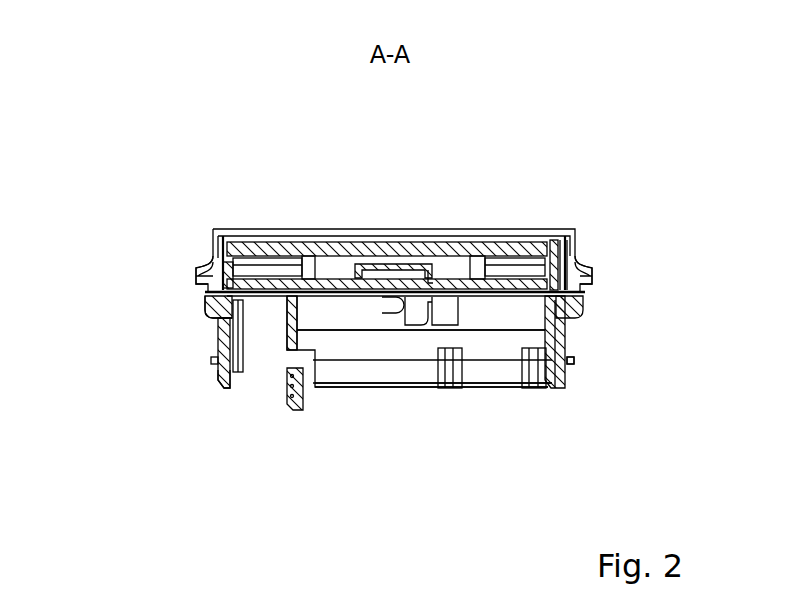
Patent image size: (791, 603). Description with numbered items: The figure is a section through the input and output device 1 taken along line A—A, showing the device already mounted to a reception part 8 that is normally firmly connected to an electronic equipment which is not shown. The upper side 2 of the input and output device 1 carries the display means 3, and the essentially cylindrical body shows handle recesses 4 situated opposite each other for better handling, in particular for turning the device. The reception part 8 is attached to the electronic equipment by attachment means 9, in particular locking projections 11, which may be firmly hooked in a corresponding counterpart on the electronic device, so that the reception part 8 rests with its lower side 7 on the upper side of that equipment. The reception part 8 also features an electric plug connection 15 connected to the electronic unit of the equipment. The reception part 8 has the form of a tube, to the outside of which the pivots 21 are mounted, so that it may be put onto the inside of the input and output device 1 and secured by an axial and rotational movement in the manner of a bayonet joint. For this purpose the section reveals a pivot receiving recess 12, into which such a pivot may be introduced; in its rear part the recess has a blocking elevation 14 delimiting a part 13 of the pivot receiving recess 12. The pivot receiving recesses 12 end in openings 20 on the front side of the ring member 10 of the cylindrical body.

The input and output device 1 is at (625, 270).
The upper side 2 is at (243, 237).
The display means 3 is at (482, 245).
The handle recesses 4 is at (578, 258).
The lower side 7 is at (524, 393).
The reception part 8 is at (565, 345).
The attachment means 9 is at (577, 359).
The ring member 10 is at (222, 382).
The locking projections 11 is at (640, 410).
The pivot receiving recess 12 is at (437, 317).
The part of the pivot receiving recess 13 is at (392, 312).
The blocking elevation 14 is at (413, 278).
The electric plug connection 15 is at (287, 405).
The openings 20 is at (447, 327).
The pivots 21 is at (218, 308).